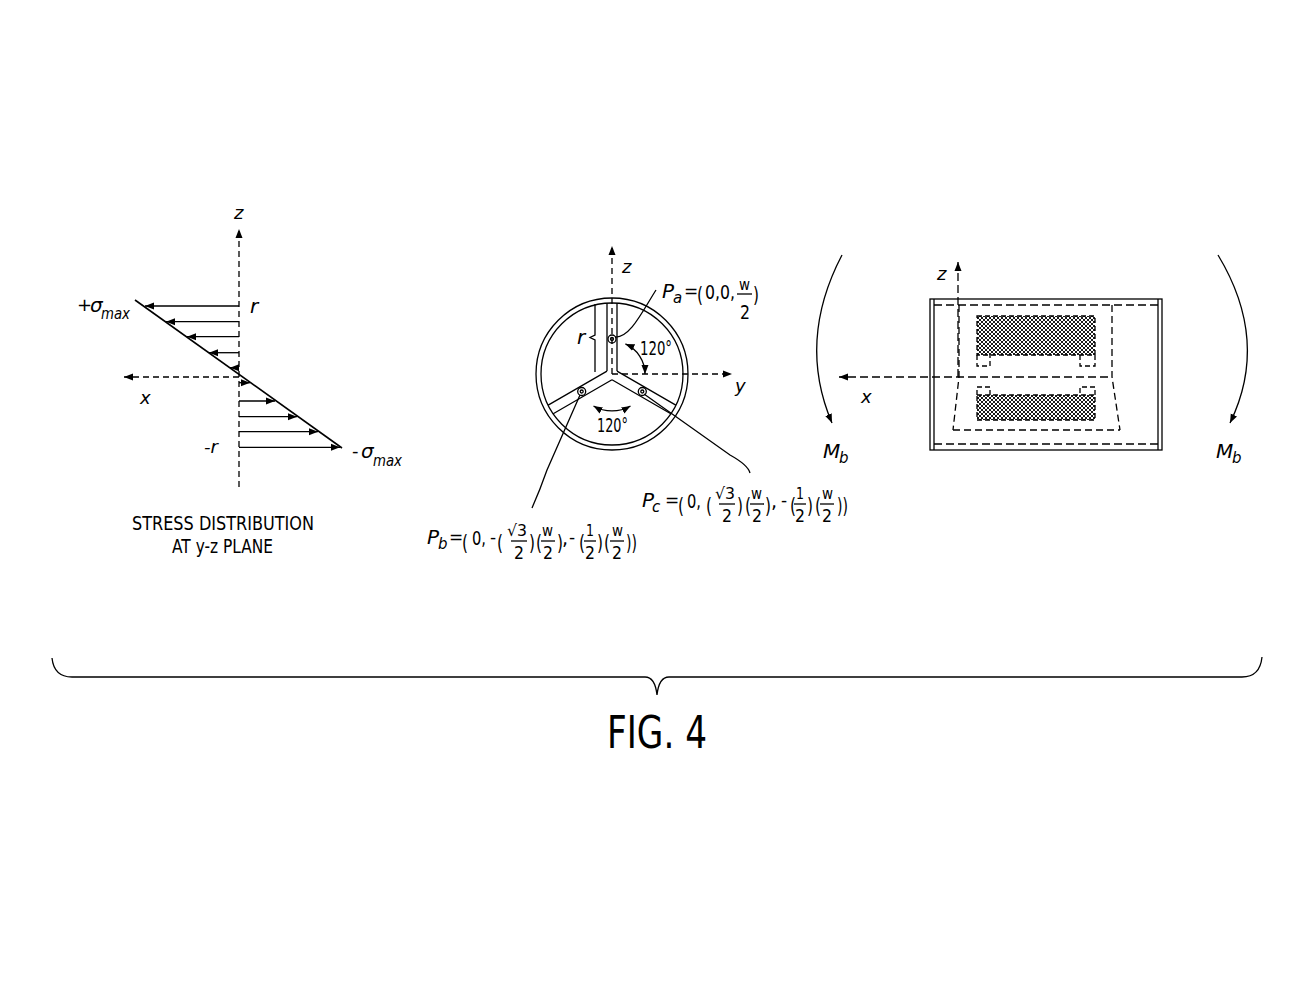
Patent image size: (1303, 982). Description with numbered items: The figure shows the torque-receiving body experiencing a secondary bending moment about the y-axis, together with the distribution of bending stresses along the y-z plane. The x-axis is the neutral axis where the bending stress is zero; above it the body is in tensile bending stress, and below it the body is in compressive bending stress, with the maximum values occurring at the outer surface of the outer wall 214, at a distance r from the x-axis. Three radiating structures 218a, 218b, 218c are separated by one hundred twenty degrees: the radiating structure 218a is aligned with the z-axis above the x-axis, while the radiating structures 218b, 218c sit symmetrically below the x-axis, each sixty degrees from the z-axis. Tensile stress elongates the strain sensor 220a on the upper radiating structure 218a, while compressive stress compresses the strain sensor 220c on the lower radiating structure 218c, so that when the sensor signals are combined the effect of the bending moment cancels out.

The outer wall 214 is at (938, 452).
The radiating structure 218a is at (609, 312).
The radiating structure 218b is at (556, 398).
The radiating structure 218c is at (657, 398).
The strain sensor 220a is at (1037, 318).
The strain sensor 220c is at (1030, 425).